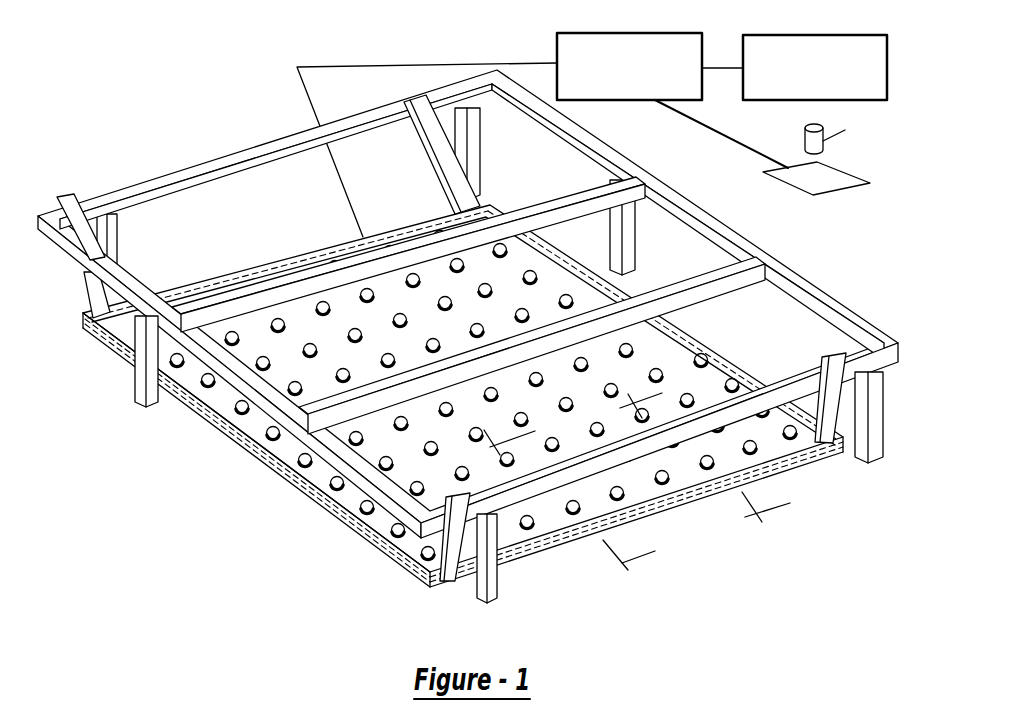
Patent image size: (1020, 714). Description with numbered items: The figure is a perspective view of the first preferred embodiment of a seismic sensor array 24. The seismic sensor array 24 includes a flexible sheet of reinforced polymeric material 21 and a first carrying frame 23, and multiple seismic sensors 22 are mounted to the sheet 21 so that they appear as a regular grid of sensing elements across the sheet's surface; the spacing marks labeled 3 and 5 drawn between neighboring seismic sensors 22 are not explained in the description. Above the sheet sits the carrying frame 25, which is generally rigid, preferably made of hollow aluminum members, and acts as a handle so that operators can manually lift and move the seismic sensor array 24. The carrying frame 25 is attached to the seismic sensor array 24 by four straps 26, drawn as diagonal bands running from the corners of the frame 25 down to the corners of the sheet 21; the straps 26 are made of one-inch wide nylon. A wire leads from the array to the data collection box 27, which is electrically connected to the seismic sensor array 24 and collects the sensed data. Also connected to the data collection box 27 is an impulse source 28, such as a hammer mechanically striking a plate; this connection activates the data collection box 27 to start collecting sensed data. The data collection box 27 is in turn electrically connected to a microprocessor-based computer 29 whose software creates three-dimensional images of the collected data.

The sensor row spacing 3 is at (715, 446).
The sensor column spacing 5 is at (573, 489).
The flexible sheet of reinforced polymeric material 21 is at (378, 518).
The seismic sensors 22 is at (375, 442).
The first carrying frame 23 is at (302, 408).
The seismic sensor array 24 is at (212, 398).
The carrying frame 25 is at (120, 314).
The straps 26 is at (468, 364).
The data collection box 27 is at (562, 35).
The impulse source 28 is at (865, 188).
The computer 29 is at (829, 36).